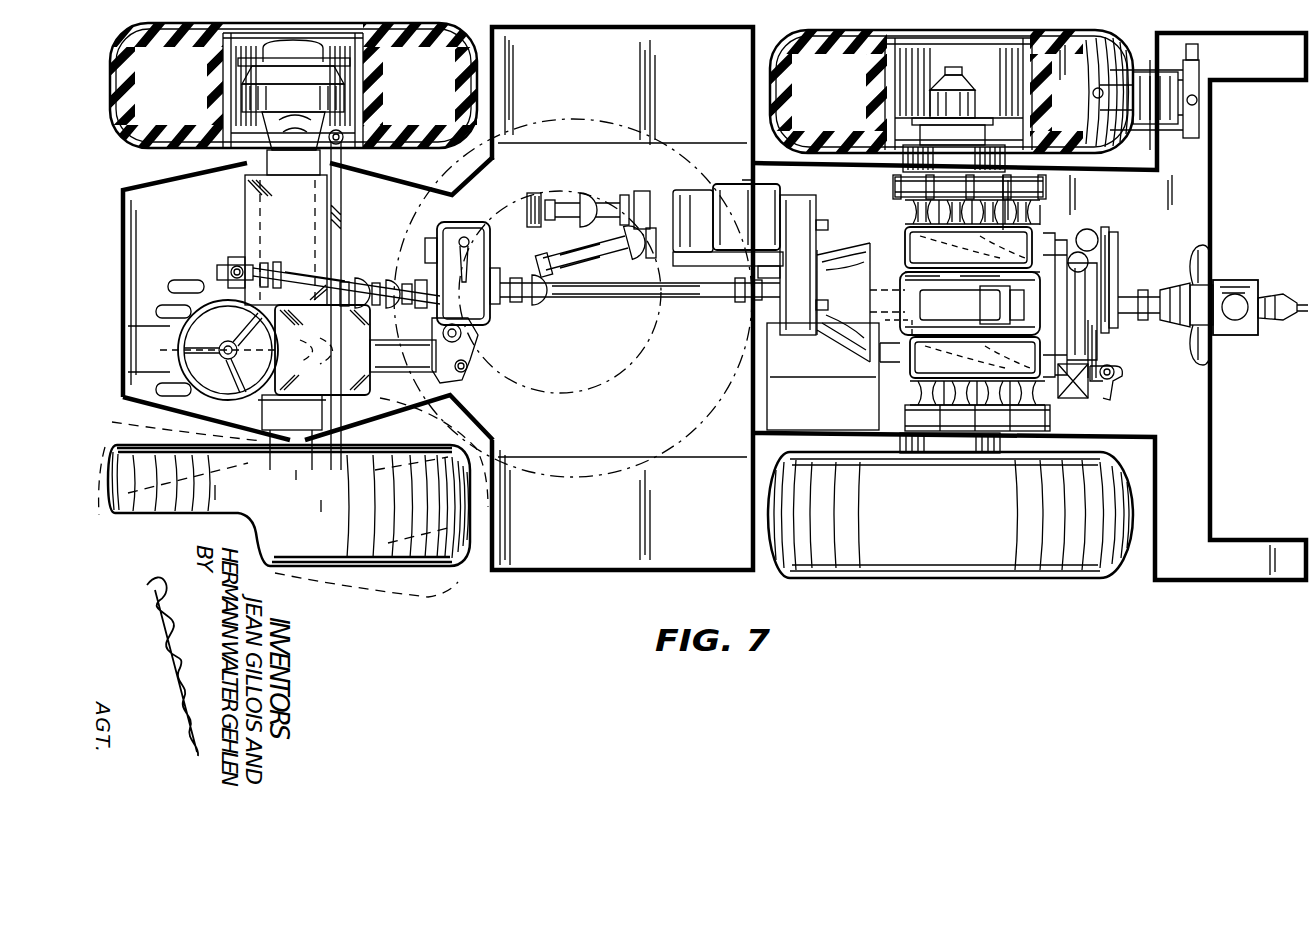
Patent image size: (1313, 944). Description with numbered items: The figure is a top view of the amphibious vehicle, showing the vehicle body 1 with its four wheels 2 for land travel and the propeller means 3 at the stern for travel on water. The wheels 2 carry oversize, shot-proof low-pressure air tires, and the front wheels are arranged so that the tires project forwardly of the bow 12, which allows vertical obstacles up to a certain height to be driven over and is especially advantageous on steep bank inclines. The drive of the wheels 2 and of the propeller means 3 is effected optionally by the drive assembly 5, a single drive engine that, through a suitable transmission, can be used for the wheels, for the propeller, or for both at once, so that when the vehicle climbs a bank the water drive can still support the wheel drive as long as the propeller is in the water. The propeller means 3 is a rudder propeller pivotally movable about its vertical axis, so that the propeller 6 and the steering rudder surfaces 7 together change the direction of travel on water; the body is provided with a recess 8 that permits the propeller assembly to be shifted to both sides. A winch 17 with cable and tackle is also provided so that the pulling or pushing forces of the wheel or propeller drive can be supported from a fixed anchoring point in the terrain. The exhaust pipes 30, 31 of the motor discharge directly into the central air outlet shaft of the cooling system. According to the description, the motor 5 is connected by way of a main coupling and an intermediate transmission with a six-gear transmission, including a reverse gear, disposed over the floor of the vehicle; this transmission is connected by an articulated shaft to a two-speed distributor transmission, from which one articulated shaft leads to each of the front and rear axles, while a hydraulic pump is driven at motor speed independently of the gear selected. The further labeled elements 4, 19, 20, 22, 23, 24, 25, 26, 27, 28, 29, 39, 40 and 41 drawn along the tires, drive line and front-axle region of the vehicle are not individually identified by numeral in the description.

The vehicle body 1 is at (618, 551).
The wheels 2 is at (330, 56).
The propeller means 3 is at (1241, 274).
The wheel 4 is at (170, 32).
The drive assembly 5 is at (1033, 223).
The propeller 6 is at (1186, 352).
The steering rudder surfaces 7 is at (1273, 325).
The recess 8 is at (1029, 306).
The bow 12 is at (117, 200).
The winch 17 is at (1148, 74).
The clutch bell housing 19 is at (838, 345).
The transfer block 20 is at (818, 210).
The gearbox 22 is at (733, 245).
The inclined shaft 23 is at (582, 252).
The steering gear housing 24 is at (478, 234).
The coupling 25 is at (374, 290).
The drive shaft 26 is at (688, 298).
The steering column housing 27 is at (268, 206).
The engine lower part 28 is at (916, 374).
The universal coupling 29 is at (560, 193).
The exhaust pipe 30 is at (1110, 246).
The exhaust pipe 31 is at (1185, 290).
The transverse shaft 39 is at (217, 308).
The steering cylinder 40 is at (470, 363).
The steering wheel 41 is at (180, 348).